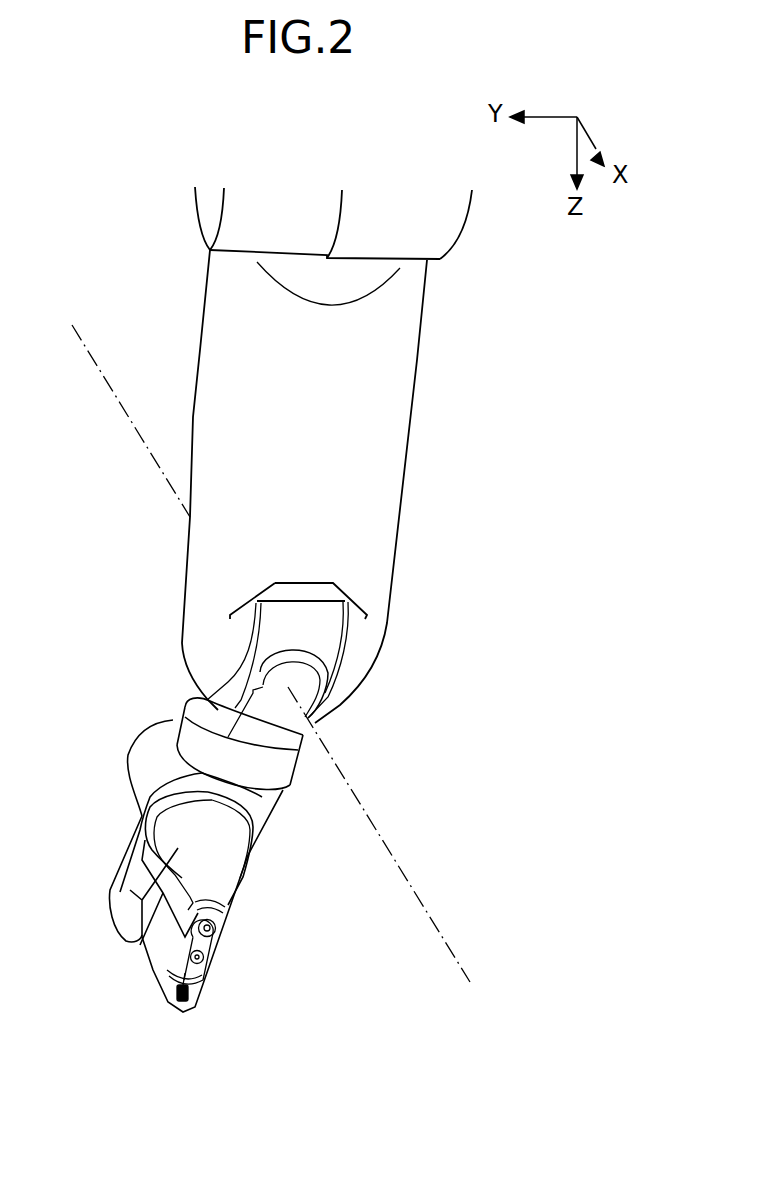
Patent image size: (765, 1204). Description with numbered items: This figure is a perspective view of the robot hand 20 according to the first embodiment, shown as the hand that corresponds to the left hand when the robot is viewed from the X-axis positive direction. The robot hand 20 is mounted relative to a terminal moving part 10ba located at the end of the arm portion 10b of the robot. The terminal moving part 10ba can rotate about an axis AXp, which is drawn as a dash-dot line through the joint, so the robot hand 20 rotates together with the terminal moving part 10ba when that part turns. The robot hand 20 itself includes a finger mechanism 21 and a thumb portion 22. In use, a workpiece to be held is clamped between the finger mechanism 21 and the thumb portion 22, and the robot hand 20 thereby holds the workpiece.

The arm portion 10b is at (412, 408).
The terminal moving part 10ba is at (180, 715).
The axis AXp is at (285, 666).
The robot hand 20 is at (293, 790).
The finger mechanism 21 is at (163, 1000).
The thumb portion 22 is at (106, 884).